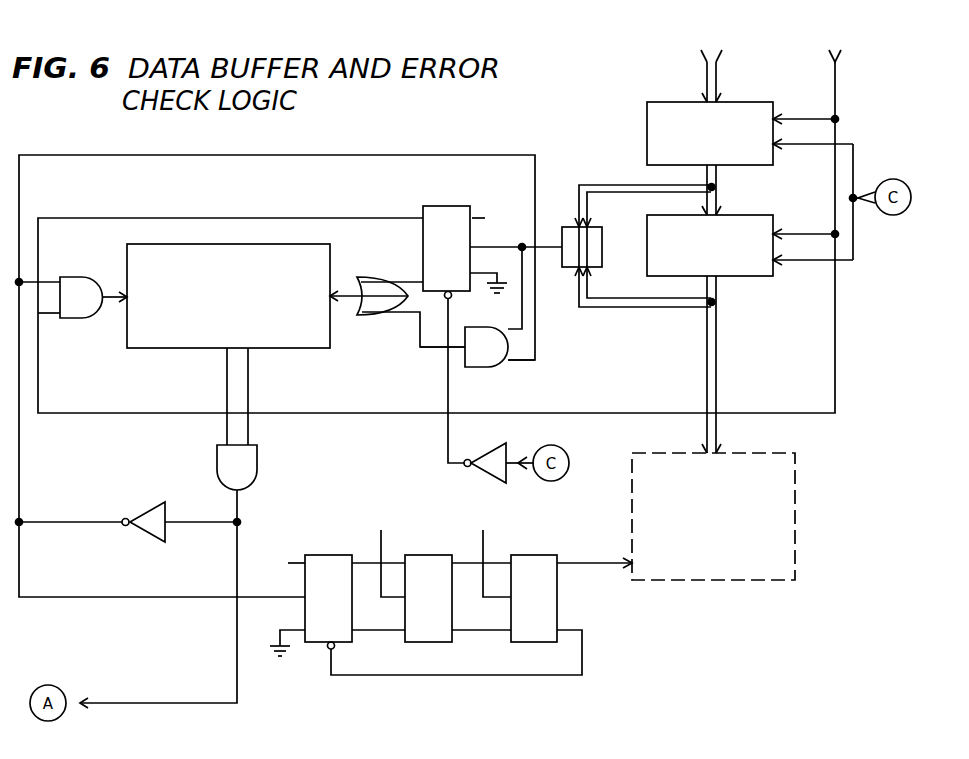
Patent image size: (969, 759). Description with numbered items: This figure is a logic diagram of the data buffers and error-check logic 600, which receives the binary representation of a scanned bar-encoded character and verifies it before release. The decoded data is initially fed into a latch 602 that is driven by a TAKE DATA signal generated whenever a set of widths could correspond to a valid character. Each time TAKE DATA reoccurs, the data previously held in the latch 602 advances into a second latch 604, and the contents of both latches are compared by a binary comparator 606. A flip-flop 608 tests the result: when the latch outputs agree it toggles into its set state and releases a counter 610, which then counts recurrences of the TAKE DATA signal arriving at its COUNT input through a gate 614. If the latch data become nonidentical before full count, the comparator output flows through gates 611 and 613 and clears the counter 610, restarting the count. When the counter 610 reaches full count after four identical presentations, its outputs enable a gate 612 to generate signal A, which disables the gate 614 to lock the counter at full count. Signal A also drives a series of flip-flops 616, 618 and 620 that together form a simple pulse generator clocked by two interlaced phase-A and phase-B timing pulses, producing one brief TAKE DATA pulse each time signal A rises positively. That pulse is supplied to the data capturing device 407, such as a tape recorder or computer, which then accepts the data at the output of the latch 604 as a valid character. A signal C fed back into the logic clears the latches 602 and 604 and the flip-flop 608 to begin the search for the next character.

The data capturing device 407 is at (731, 580).
The data buffers and error-check logic 600 is at (453, 312).
The latch 602 is at (647, 118).
The second latch 604 is at (755, 276).
The binary comparator 606 is at (603, 262).
The flip-flop 608 is at (450, 206).
The counter 610 is at (293, 349).
The gate 611 is at (477, 307).
The gate 612 is at (257, 455).
The gate 613 is at (397, 312).
The gate 614 is at (73, 297).
The flip-flop 616 is at (352, 642).
The flip-flop 618 is at (440, 642).
The flip-flop 620 is at (533, 642).